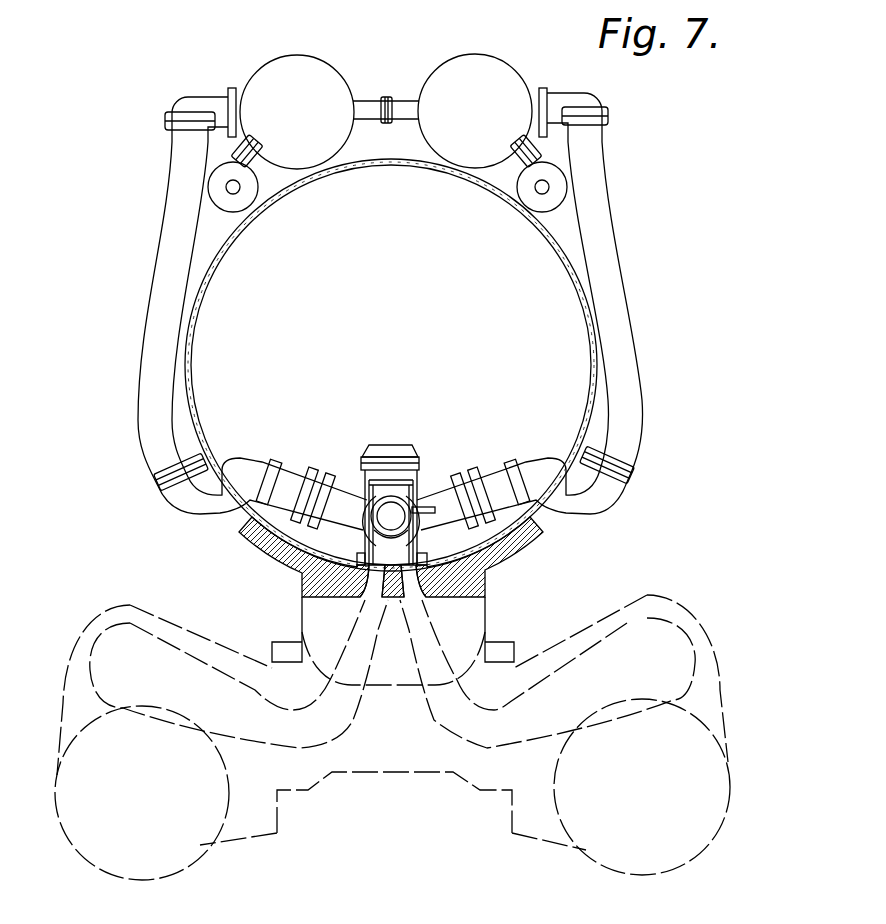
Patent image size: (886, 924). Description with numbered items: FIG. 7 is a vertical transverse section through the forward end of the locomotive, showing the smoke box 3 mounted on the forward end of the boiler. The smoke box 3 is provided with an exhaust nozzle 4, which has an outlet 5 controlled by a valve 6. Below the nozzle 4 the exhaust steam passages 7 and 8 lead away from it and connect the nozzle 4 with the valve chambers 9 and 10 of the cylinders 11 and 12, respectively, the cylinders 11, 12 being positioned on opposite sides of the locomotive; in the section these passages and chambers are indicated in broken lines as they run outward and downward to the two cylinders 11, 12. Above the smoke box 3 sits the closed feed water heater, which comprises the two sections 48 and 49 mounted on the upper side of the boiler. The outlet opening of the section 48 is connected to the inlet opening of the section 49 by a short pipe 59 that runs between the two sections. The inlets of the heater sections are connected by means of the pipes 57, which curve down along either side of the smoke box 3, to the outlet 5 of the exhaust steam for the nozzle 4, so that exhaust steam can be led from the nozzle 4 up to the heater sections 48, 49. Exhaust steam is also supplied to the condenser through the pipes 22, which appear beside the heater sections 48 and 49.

The smoke box 3 is at (428, 168).
The exhaust nozzle 4 is at (415, 492).
The outlet 5 is at (412, 536).
The valve 6 is at (373, 533).
The exhaust steam passage 7 is at (370, 600).
The exhaust steam passage 8 is at (420, 600).
The valve chamber 9 is at (124, 622).
The valve chamber 10 is at (680, 630).
The cylinder 11 is at (57, 775).
The cylinder 12 is at (731, 782).
The pipe 22 is at (240, 147).
The section 48 is at (291, 112).
The section 49 is at (482, 111).
The pipe 57 is at (153, 335).
The pipe 59 is at (366, 110).